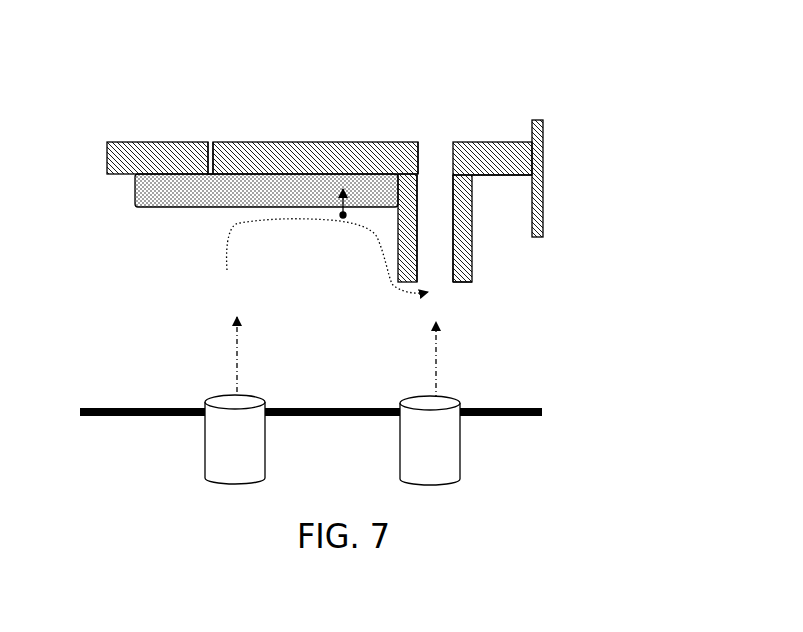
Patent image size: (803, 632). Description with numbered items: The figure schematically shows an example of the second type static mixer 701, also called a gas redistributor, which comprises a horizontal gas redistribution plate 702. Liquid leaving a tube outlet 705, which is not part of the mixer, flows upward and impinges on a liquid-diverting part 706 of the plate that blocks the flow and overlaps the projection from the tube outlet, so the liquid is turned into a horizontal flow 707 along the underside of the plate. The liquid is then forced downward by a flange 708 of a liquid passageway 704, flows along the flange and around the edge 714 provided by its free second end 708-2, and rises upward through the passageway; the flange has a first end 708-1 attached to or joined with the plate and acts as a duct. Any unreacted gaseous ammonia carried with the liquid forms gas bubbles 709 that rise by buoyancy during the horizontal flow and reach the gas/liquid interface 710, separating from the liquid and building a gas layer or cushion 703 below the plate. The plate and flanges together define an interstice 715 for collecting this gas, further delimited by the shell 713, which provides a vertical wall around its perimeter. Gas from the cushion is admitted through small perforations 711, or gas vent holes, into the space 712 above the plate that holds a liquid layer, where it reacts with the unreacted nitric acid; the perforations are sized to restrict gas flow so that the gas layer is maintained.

The second type static mixer 701 is at (146, 84).
The gas redistribution plate 702 is at (315, 127).
The gas layer or cushion 703 is at (173, 160).
The liquid passageway 704 is at (440, 157).
The tube outlet 705 is at (223, 396).
The liquid-diverting part 706 is at (265, 158).
The horizontal flow 707 is at (267, 220).
The flange 708 is at (451, 239).
The first end 708-1 is at (473, 178).
The second end 708-2 is at (470, 283).
The NH3 gas bubbles 709 is at (343, 218).
The gas/liquid interface 710 is at (192, 162).
The perforations 711 is at (210, 144).
The space 712 is at (400, 118).
The shell 713 is at (533, 120).
The edge 714 is at (409, 361).
The interstice 715 is at (497, 187).